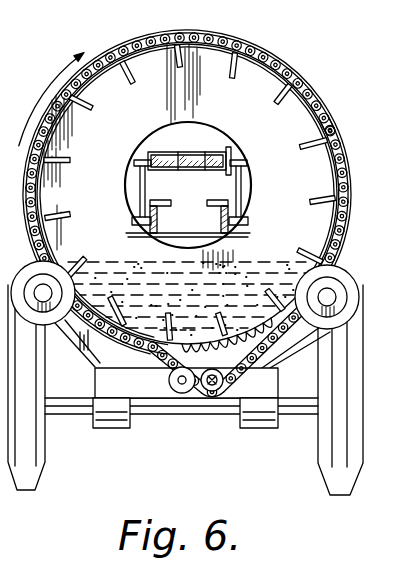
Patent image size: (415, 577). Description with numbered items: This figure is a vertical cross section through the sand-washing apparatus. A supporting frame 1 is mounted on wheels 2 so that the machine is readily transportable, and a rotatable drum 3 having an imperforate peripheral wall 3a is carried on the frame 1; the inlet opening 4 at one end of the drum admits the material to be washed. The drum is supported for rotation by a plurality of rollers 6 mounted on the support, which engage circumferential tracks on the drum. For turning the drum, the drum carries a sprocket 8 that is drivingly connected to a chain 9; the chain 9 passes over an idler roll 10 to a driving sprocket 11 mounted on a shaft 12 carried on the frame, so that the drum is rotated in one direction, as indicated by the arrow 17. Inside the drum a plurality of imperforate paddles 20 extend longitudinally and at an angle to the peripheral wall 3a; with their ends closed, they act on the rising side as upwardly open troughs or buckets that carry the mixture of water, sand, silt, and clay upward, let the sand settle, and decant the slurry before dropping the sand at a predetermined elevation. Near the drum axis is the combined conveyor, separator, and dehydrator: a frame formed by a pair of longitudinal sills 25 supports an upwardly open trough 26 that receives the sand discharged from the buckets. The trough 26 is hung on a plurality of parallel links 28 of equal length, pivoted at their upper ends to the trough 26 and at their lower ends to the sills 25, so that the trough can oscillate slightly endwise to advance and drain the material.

The supporting frame 1 is at (158, 398).
The wheels 2 is at (45, 472).
The rotatable drum 3 is at (295, 88).
The imperforate peripheral wall 3a is at (315, 118).
The inlet opening 4 is at (193, 132).
The rollers 6 is at (35, 268).
The sprocket 8 is at (235, 370).
The chain 9 is at (332, 117).
The idler roll 10 is at (182, 393).
The driving sprocket 11 is at (198, 330).
The shaft 12 is at (209, 393).
The arrow 17 is at (59, 71).
The imperforate paddles 20 is at (92, 108).
The longitudinal sills 25 is at (216, 201).
The trough 26 is at (235, 148).
The links 28 is at (241, 184).